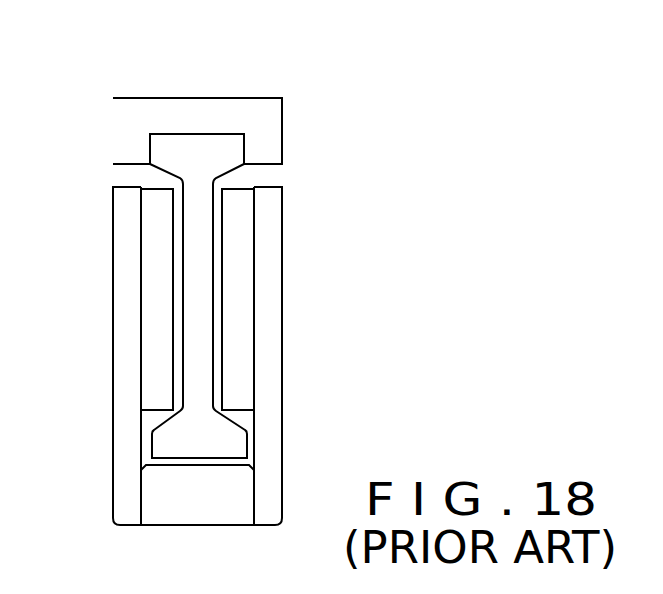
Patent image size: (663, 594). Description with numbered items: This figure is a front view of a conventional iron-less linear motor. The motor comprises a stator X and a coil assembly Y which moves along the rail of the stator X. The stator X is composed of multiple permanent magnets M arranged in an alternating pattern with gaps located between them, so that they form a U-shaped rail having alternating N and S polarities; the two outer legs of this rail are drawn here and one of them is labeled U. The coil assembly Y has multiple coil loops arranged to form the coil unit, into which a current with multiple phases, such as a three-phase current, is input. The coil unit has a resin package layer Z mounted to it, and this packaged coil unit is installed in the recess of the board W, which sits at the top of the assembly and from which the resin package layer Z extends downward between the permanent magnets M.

The board W is at (235, 112).
The coil assembly Y is at (141, 97).
The resin package layer Z is at (200, 215).
The outer yoke left U is at (127, 275).
The stator X is at (262, 344).
The permanent magnets M is at (151, 357).